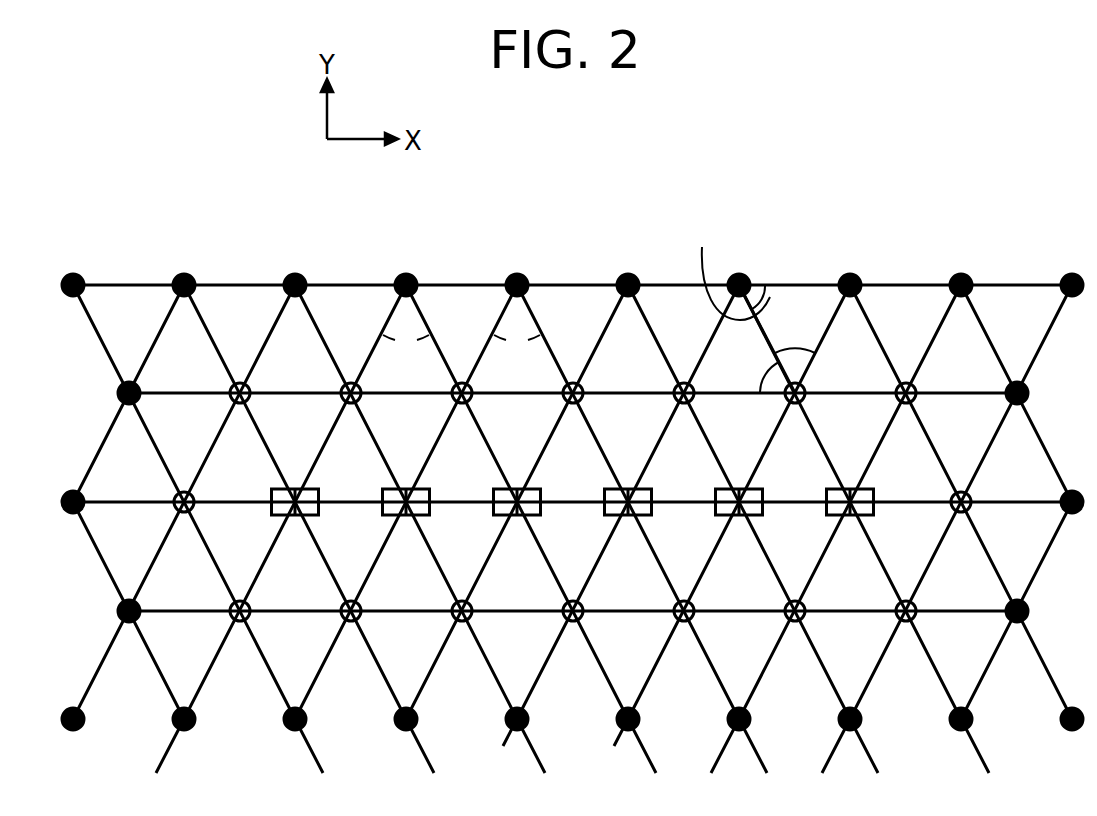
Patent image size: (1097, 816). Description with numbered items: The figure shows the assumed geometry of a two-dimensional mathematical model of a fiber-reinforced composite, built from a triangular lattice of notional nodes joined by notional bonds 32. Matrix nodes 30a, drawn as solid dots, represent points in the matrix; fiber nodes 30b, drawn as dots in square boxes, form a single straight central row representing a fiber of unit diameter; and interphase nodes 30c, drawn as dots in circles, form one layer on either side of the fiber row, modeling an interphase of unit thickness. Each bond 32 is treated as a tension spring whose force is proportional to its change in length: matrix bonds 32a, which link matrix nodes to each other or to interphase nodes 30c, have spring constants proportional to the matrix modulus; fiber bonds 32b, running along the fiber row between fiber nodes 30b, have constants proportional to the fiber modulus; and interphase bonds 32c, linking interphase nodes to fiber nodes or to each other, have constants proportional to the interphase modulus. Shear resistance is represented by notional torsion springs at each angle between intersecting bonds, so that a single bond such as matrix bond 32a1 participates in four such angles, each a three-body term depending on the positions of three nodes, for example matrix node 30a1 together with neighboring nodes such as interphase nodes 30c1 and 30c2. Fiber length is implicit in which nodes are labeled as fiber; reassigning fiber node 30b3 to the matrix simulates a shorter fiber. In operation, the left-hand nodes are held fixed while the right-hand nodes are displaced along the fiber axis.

The matrix node 30a is at (181, 276).
The matrix node 30a1 is at (747, 280).
The fiber node 30b is at (318, 507).
The fiber node 30b3 is at (858, 507).
The interphase node 30c is at (246, 389).
The interphase node 30c1 is at (800, 395).
The interphase node 30c2 is at (690, 390).
The bond 32 is at (470, 281).
The matrix bond 32a is at (243, 281).
The matrix bond 32a1 is at (767, 322).
The fiber bond 32b is at (354, 500).
The interphase bond 32c is at (273, 458).